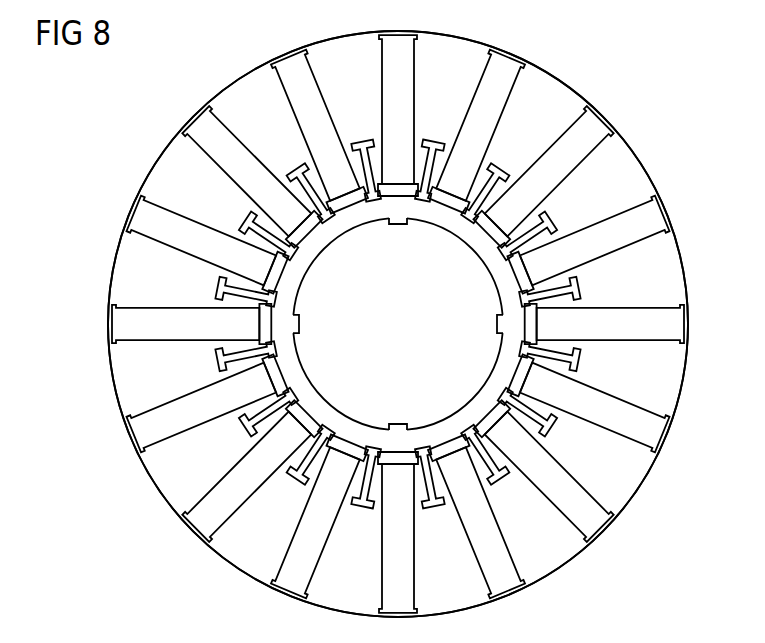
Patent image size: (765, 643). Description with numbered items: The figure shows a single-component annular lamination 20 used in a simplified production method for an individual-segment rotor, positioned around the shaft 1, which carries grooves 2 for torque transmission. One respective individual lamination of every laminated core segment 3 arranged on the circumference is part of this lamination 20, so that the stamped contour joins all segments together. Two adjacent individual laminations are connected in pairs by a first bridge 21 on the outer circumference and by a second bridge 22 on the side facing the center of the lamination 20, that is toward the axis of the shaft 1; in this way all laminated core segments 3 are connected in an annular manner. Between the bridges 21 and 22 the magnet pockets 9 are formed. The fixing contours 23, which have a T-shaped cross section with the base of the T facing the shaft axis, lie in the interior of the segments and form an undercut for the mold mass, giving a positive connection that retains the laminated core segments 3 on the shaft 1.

The shaft 1 is at (405, 337).
The grooves 2 is at (396, 420).
The laminated core segments 3 is at (128, 272).
The magnet pockets 9 is at (127, 323).
The lamination 20 is at (95, 388).
The first bridges 21 is at (192, 120).
The second bridge 22 is at (293, 230).
The fixing contours 23 is at (243, 420).